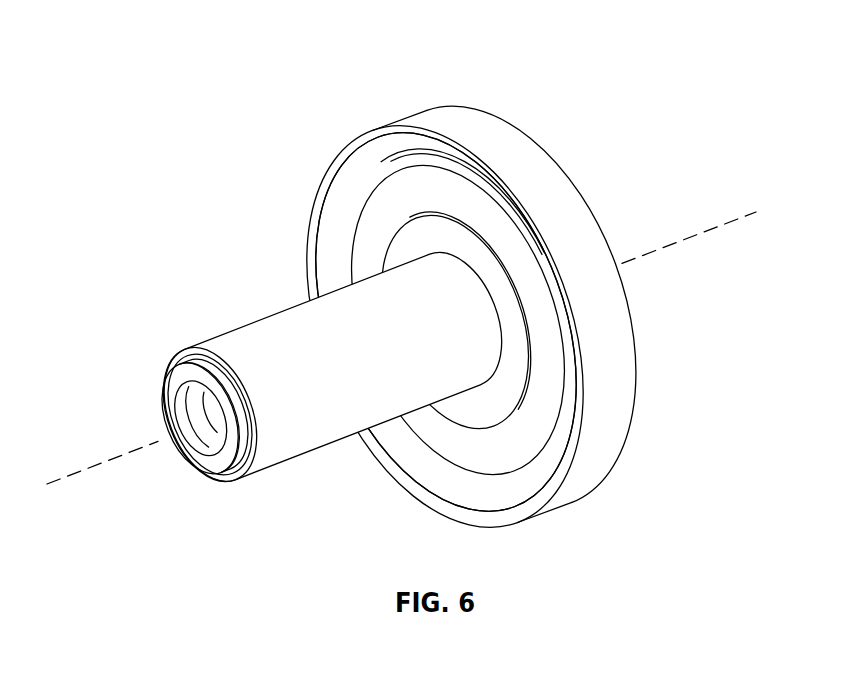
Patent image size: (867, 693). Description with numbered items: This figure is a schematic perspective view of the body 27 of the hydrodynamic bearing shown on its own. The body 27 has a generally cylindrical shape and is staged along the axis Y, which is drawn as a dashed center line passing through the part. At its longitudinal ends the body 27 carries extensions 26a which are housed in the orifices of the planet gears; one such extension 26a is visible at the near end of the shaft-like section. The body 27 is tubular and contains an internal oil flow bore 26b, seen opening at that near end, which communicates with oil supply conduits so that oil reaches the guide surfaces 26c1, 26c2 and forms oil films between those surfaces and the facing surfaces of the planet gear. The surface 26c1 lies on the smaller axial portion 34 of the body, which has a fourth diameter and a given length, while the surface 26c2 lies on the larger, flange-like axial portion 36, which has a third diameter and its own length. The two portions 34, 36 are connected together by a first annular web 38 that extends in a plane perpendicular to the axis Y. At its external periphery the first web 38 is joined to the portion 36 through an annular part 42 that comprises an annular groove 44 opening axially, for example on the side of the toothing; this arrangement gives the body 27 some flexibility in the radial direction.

The body 27 is at (404, 299).
The axial portion 34 is at (277, 380).
The axial portion 36 is at (485, 299).
The first annular web 38 is at (384, 215).
The annular part 42 is at (408, 158).
The annular groove 44 is at (408, 158).
The extensions 26a is at (195, 462).
The internal oil flow bore 26b is at (203, 417).
The surface 26c1 is at (320, 436).
The surface 26c2 is at (610, 437).
The axis Y is at (733, 222).